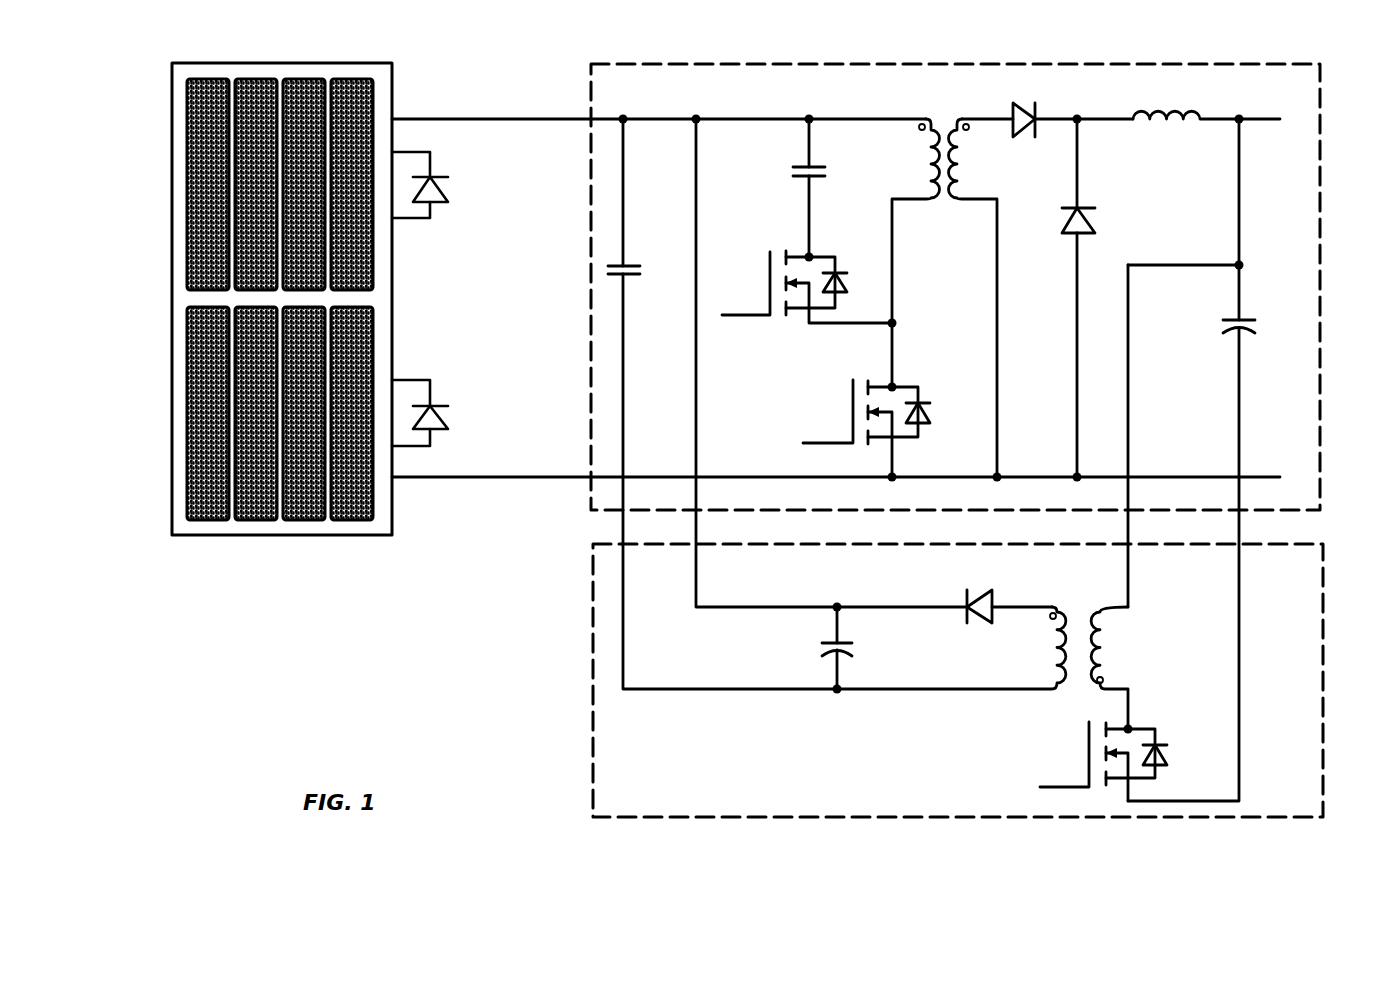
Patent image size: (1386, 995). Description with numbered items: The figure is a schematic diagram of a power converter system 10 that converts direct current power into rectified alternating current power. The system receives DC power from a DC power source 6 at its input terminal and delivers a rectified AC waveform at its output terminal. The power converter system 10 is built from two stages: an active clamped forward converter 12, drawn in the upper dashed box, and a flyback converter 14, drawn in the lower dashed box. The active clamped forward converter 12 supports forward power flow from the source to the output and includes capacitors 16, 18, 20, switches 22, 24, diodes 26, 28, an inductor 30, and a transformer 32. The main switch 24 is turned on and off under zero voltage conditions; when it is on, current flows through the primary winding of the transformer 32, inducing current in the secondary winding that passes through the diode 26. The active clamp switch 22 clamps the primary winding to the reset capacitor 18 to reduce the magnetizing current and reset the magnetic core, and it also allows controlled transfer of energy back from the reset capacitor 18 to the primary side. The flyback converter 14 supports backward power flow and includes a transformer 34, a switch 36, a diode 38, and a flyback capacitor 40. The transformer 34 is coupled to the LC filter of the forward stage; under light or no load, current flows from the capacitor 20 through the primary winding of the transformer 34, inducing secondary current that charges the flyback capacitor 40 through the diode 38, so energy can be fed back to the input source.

The DC power source 6 is at (393, 98).
The power converter system 10 is at (316, 661).
The active clamped forward converter 12 is at (1322, 157).
The flyback converter 14 is at (1325, 640).
The capacitor 16 is at (629, 278).
The reset capacitor 18 is at (800, 186).
The capacitor 20 is at (1227, 318).
The active clamp switch 22 is at (797, 325).
The main switch 24 is at (846, 392).
The diode 26 is at (1022, 100).
The diode 28 is at (1095, 223).
The inductor 30 is at (1140, 100).
The transformer 32 is at (947, 205).
The transformer 34 is at (1078, 685).
The switch 36 is at (1158, 731).
The diode 38 is at (980, 593).
The flyback capacitor 40 is at (826, 643).